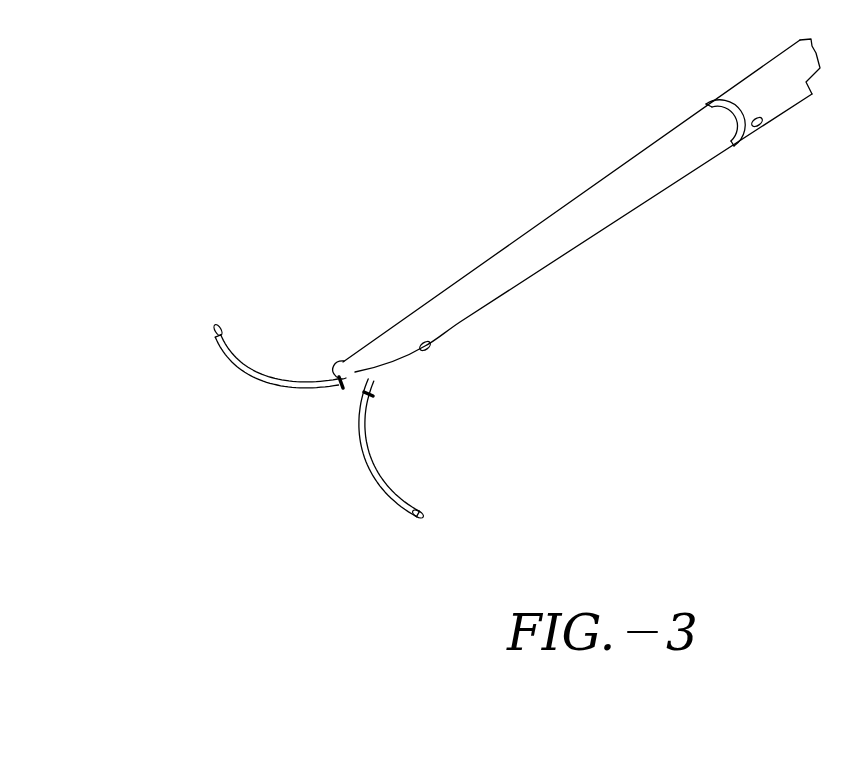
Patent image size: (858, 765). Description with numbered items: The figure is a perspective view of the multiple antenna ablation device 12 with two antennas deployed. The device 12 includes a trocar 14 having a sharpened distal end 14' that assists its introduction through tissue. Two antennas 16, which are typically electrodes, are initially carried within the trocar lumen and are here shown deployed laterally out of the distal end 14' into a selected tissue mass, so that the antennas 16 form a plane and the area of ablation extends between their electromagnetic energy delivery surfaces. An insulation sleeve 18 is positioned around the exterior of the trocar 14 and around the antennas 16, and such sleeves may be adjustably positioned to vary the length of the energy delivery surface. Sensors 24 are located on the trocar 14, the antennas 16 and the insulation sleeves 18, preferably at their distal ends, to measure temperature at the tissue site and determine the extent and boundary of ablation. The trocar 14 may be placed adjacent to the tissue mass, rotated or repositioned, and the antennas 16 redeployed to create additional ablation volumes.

The multiple antenna ablation device 12 is at (604, 389).
The trocar 14 is at (581, 205).
The sharpened distal end 14' is at (330, 333).
The antennas 16 is at (235, 360).
The insulation sleeve 18 is at (738, 90).
The sensors 24 is at (763, 126).